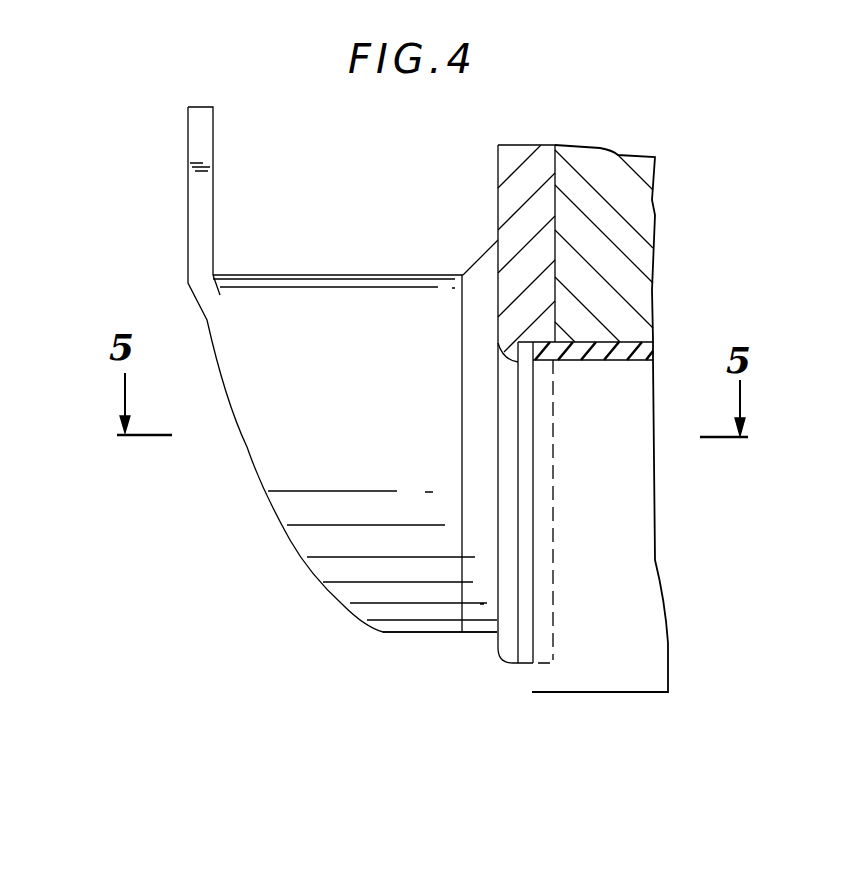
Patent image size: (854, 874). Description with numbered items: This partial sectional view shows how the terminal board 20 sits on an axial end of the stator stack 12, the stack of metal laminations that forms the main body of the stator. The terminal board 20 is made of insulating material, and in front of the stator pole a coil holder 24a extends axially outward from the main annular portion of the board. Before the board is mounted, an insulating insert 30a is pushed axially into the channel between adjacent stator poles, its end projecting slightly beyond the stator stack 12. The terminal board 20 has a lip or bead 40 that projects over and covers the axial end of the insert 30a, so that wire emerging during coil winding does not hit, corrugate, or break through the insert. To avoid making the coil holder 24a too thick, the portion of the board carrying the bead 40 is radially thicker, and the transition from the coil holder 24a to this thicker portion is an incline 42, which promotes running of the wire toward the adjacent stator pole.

The stator stack 12 is at (632, 224).
The terminal board 20 is at (517, 204).
The coil holder 24a is at (358, 603).
The insert 30a is at (653, 349).
The lip or bead 40 is at (505, 647).
The incline 42 is at (473, 618).